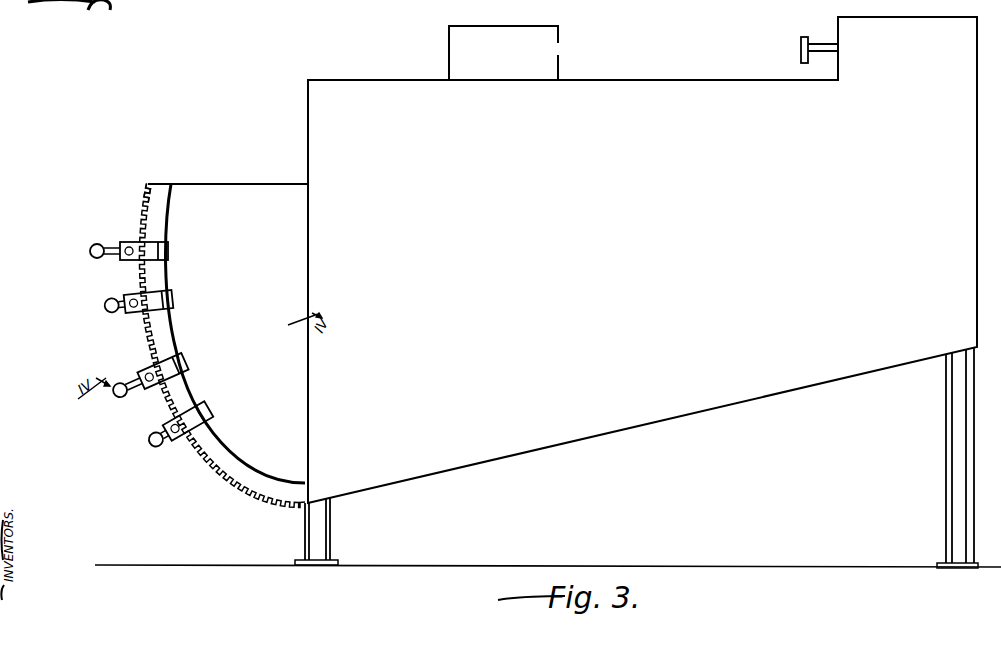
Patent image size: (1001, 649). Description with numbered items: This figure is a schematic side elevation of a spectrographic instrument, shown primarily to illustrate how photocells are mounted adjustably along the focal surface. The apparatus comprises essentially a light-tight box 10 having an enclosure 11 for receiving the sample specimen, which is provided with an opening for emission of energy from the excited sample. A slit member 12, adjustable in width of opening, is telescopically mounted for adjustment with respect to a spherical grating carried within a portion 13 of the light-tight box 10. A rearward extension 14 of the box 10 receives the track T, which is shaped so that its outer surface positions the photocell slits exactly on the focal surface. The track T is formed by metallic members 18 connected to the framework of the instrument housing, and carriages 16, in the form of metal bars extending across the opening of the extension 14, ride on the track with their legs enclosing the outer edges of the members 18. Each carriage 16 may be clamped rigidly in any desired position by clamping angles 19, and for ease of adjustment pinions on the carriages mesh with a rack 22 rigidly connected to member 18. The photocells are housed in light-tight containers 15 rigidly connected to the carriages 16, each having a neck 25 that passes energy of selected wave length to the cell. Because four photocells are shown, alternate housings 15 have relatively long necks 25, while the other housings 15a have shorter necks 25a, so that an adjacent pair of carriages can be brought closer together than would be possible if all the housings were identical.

The light-tight box 10 is at (650, 219).
The enclosure 11 is at (465, 44).
The slit member 12 is at (800, 42).
The portion of the light-tight box 13 is at (894, 17).
The rearward extension 14 is at (237, 184).
The light-tight container 15 is at (94, 244).
The housing with shorter neck 15a is at (104, 312).
The carriage 16 is at (133, 242).
The metallic member 18 is at (176, 331).
The clamping angle 19 is at (170, 250).
The rack 22 is at (147, 197).
The neck 25 is at (104, 256).
The shorter neck 25a is at (120, 300).
The track T is at (172, 212).